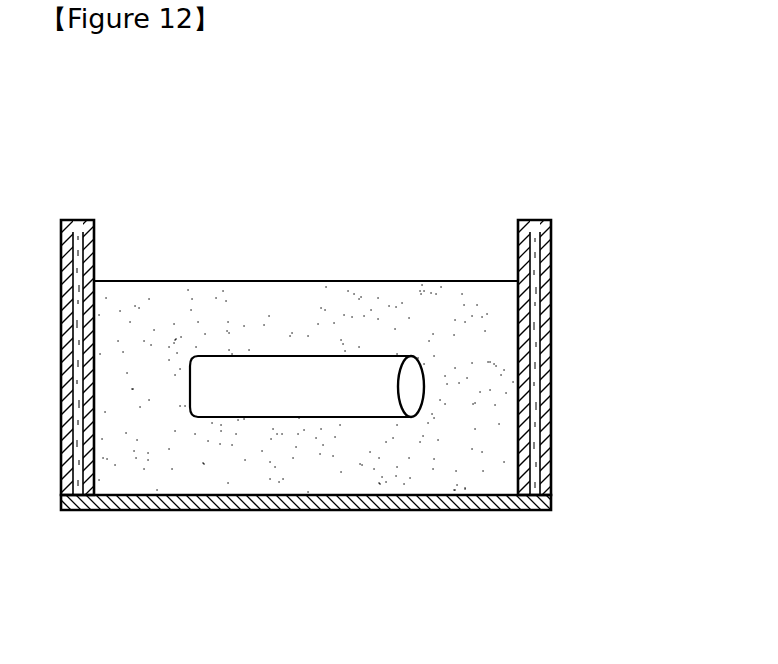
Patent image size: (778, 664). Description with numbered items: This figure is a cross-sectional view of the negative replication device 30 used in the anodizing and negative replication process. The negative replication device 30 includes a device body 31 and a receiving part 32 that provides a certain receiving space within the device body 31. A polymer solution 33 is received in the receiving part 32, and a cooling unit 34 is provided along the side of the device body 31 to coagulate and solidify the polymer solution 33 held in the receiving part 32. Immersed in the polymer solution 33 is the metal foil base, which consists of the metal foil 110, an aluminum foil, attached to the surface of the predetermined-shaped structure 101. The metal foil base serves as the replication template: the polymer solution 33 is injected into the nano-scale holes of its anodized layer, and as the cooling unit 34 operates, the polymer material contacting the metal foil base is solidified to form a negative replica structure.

The negative replication device 30 is at (466, 153).
The device body 31 is at (553, 240).
The receiving part 32 is at (210, 246).
The polymer solution 33 is at (357, 295).
The cooling unit 34 is at (546, 343).
The metal foil 110 is at (300, 396).
The predetermined-shaped structure 101 is at (414, 396).